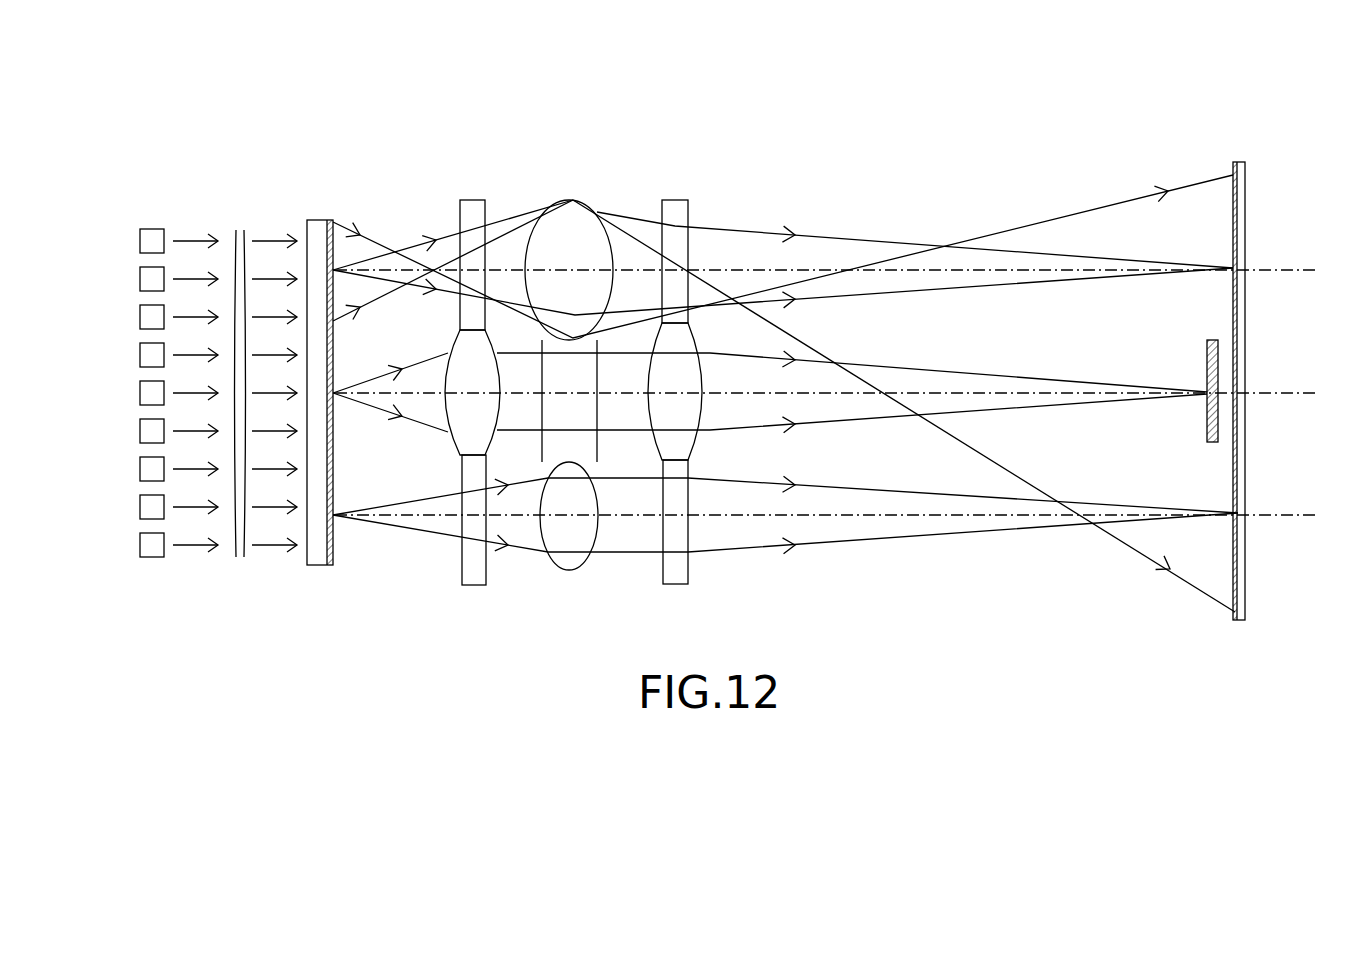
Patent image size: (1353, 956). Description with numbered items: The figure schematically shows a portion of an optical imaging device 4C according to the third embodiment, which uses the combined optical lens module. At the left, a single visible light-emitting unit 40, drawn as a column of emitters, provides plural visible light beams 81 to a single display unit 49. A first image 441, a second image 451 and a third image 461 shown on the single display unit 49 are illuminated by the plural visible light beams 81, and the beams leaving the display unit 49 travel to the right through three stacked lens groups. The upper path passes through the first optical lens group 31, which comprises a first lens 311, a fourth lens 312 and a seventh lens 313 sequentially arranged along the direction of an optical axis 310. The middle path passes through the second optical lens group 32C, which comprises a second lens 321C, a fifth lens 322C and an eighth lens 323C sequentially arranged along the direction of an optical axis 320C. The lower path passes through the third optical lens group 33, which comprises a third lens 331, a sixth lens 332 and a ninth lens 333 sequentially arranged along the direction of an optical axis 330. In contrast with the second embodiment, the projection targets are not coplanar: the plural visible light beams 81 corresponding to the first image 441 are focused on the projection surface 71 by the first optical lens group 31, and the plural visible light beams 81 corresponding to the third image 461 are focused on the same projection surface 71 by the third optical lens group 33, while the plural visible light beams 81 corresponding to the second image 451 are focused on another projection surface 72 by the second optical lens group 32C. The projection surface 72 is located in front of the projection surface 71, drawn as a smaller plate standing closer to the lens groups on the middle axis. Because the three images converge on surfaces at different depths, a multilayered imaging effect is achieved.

The optical imaging device 4C is at (388, 104).
The visible light-emitting unit 40 is at (142, 233).
The visible light beams 81 is at (1113, 350).
The display unit 49 is at (320, 220).
The first image 441 is at (337, 303).
The second image 451 is at (338, 420).
The third image 461 is at (340, 540).
The first optical lens group 31 is at (836, 136).
The first lens 311 is at (470, 200).
The fourth lens 312 is at (565, 203).
The seventh lens 313 is at (677, 200).
The second optical lens group 32C is at (966, 136).
The second lens 321C is at (453, 417).
The fifth lens 322C is at (587, 408).
The eighth lens 323C is at (690, 413).
The third optical lens group 33 is at (1093, 136).
The third lens 331 is at (468, 565).
The sixth lens 332 is at (570, 556).
The ninth lens 333 is at (671, 562).
The projection surface 71 is at (1233, 327).
The projection surface 72 is at (1207, 415).
The optical axis 310 is at (1278, 270).
The optical axis 320C is at (1278, 393).
The optical axis 330 is at (1278, 516).